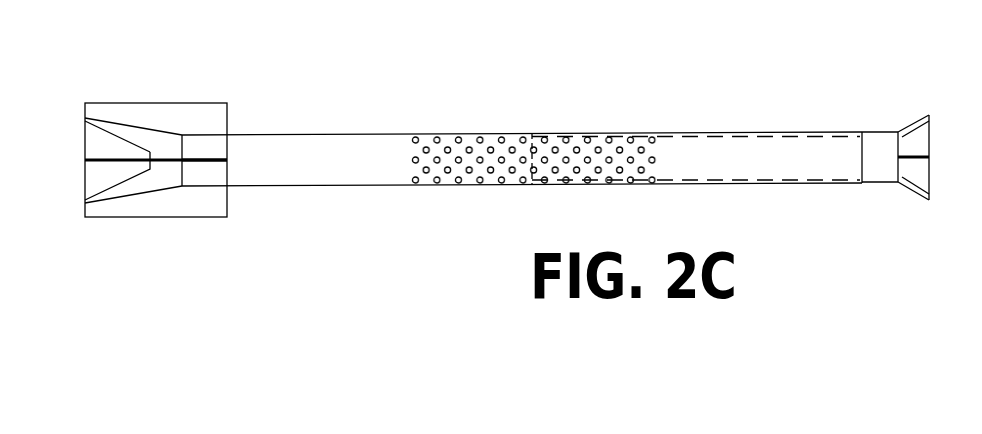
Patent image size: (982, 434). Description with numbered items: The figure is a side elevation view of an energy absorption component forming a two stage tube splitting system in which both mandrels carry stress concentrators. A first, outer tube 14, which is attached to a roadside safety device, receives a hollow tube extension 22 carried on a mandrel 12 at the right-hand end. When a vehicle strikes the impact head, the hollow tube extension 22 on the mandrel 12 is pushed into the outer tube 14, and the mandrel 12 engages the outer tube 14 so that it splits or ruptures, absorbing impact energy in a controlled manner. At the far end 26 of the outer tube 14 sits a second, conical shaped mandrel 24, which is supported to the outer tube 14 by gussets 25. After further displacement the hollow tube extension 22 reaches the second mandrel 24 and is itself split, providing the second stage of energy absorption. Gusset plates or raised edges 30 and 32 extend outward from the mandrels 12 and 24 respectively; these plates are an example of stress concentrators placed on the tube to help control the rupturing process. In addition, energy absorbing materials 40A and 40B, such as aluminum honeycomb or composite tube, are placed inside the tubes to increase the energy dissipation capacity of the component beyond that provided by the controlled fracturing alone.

The mandrel 12 is at (907, 146).
The outer tube 14 is at (712, 132).
The hollow tube extension 22 is at (547, 125).
The second mandrel 24 is at (103, 175).
The gussets 25 is at (208, 118).
The far end 26 is at (196, 177).
The gusset plates 30 is at (927, 113).
The gusset plates 32 is at (103, 122).
The energy absorbing material 40A is at (468, 150).
The energy absorbing material 40B is at (602, 157).